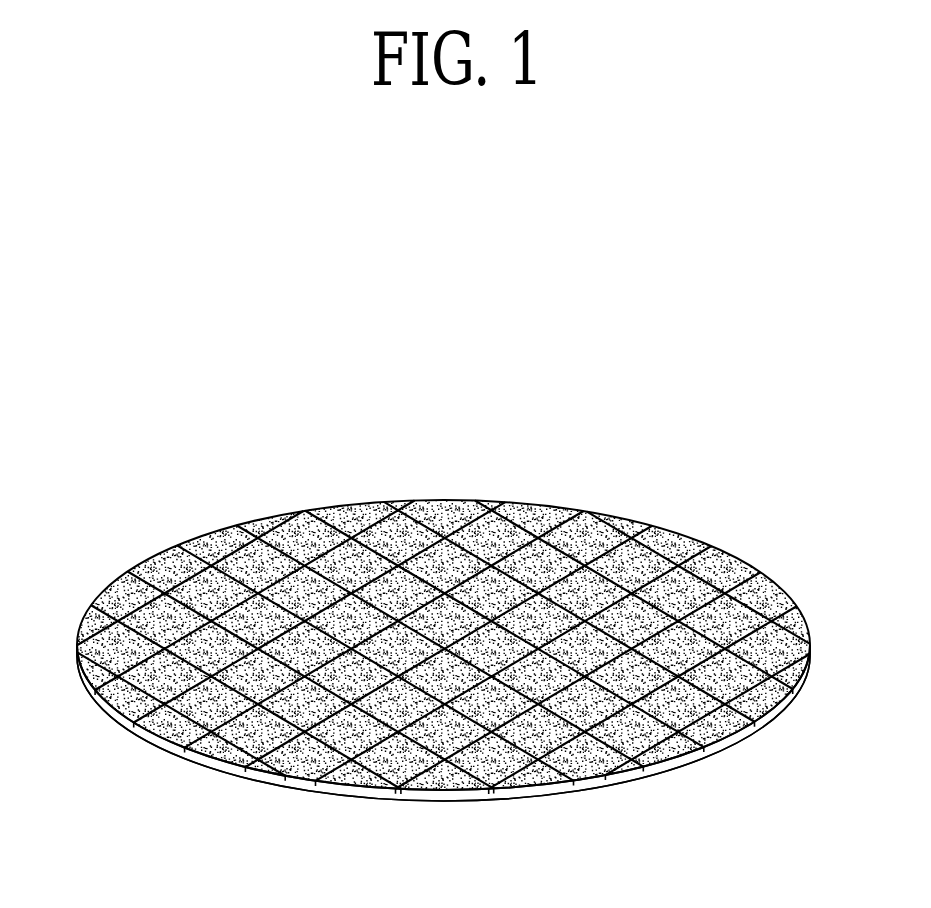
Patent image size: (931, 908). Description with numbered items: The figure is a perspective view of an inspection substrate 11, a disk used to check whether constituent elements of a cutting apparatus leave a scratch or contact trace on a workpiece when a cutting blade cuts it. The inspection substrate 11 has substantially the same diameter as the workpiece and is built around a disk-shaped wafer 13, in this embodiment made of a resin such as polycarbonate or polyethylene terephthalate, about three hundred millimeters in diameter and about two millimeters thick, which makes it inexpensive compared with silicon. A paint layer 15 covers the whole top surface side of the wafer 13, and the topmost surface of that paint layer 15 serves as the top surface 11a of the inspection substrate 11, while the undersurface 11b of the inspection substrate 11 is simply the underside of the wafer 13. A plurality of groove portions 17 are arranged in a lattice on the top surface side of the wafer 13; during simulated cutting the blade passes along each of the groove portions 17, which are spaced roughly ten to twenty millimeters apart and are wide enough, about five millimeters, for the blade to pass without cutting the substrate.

The inspection substrate 11 is at (443, 641).
The top surface 11a is at (443, 647).
The undersurface 11b is at (712, 750).
The wafer 13 is at (368, 784).
The paint layer 15 is at (333, 777).
The groove portions 17 is at (408, 492).